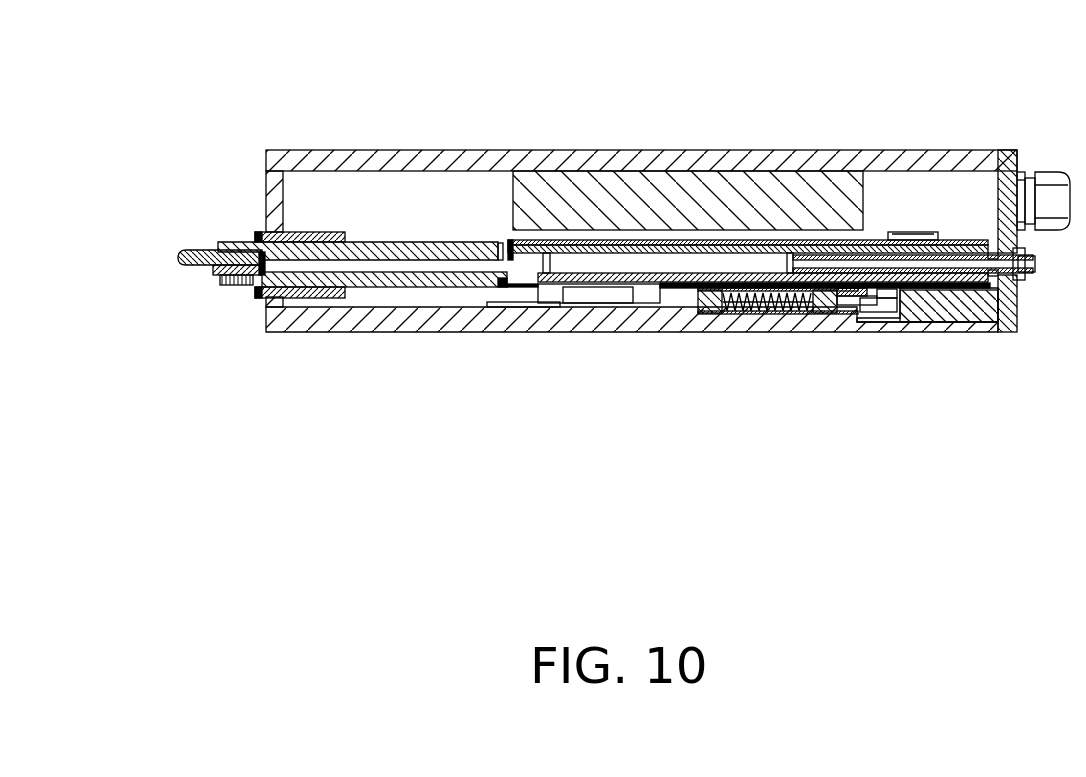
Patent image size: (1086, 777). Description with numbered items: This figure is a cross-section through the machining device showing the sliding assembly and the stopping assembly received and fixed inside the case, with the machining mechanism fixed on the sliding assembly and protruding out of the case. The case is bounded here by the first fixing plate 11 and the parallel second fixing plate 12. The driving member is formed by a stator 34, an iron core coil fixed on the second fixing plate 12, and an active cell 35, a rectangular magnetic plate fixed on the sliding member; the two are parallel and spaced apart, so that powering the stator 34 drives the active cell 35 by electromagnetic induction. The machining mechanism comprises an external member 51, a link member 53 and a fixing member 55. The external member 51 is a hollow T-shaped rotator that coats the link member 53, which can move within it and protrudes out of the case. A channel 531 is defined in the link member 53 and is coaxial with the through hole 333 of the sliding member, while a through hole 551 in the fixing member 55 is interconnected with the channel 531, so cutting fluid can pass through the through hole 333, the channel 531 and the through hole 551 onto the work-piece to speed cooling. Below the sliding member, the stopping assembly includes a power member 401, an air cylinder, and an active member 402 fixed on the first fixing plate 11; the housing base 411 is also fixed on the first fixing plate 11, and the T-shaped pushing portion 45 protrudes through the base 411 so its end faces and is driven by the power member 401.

The first fixing plate 11 is at (485, 322).
The second fixing plate 12 is at (370, 165).
The stator 34 is at (805, 205).
The active cell 35 is at (699, 242).
The through hole 333 is at (584, 262).
The link member 53 is at (386, 283).
The channel 531 is at (262, 236).
The external member 51 is at (256, 297).
The fixing member 55 is at (190, 250).
The through hole 551 is at (216, 268).
The power member 401 is at (950, 310).
The active member 402 is at (705, 313).
The base 411 is at (767, 313).
The pushing portion 45 is at (838, 312).